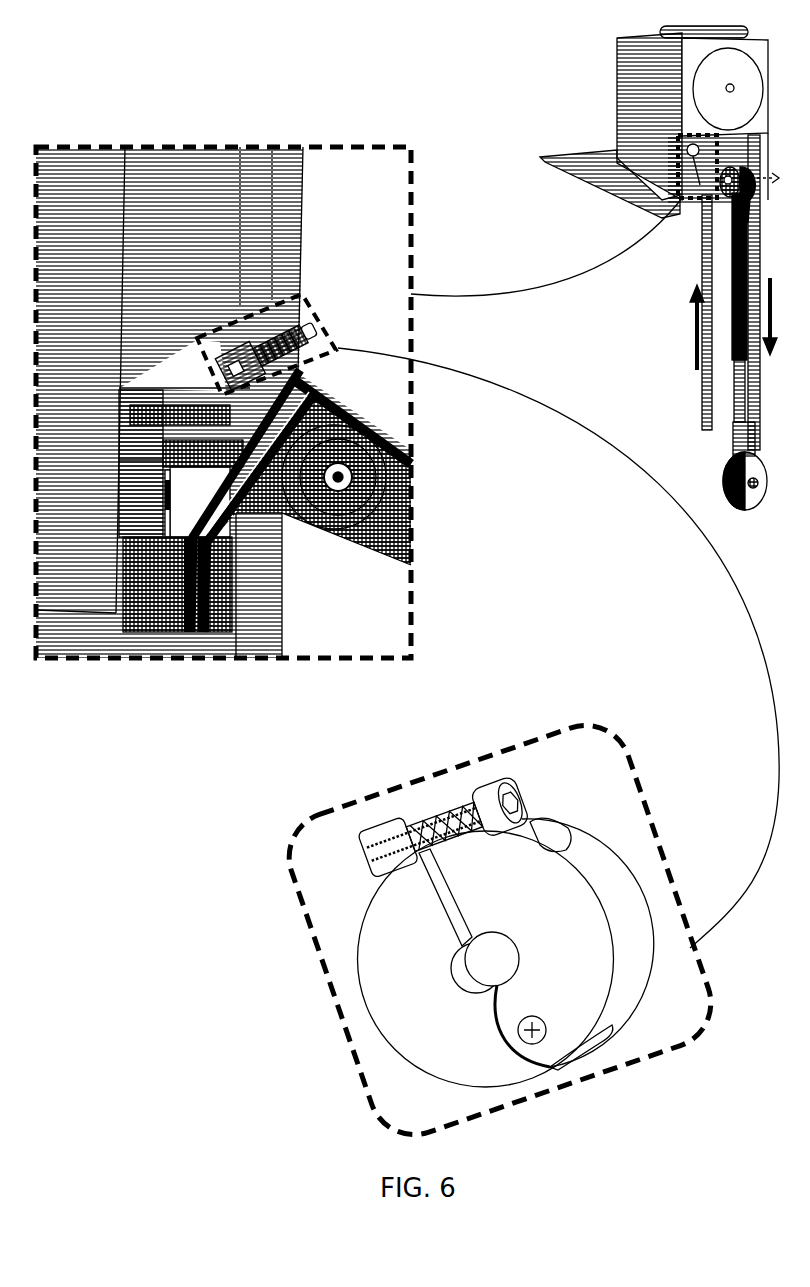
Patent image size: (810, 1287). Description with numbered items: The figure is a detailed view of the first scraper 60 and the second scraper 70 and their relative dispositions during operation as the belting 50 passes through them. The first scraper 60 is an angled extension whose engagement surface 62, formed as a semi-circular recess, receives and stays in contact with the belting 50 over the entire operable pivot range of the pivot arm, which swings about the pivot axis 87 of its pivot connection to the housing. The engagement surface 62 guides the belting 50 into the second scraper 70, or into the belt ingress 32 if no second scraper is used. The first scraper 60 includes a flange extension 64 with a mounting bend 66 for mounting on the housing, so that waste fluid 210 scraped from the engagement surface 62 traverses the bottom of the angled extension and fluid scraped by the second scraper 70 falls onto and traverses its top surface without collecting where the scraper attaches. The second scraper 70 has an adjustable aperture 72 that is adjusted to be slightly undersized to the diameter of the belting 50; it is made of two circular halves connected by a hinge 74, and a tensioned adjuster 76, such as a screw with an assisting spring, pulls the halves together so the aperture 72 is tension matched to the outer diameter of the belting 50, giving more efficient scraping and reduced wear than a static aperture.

The belt ingress 32 is at (273, 220).
The belting 50 is at (411, 452).
The first scraper 60 is at (244, 508).
The engagement surface 62 is at (313, 391).
The flange extension 64 is at (192, 487).
The mounting bend 66 is at (163, 515).
The second scraper 70 is at (232, 326).
The adjustable aperture 72 is at (455, 950).
The hinge 74 is at (542, 1017).
The tensioned adjuster 76 is at (518, 798).
The pivot axis 87 is at (338, 483).
The waste fluid 210 is at (184, 632).